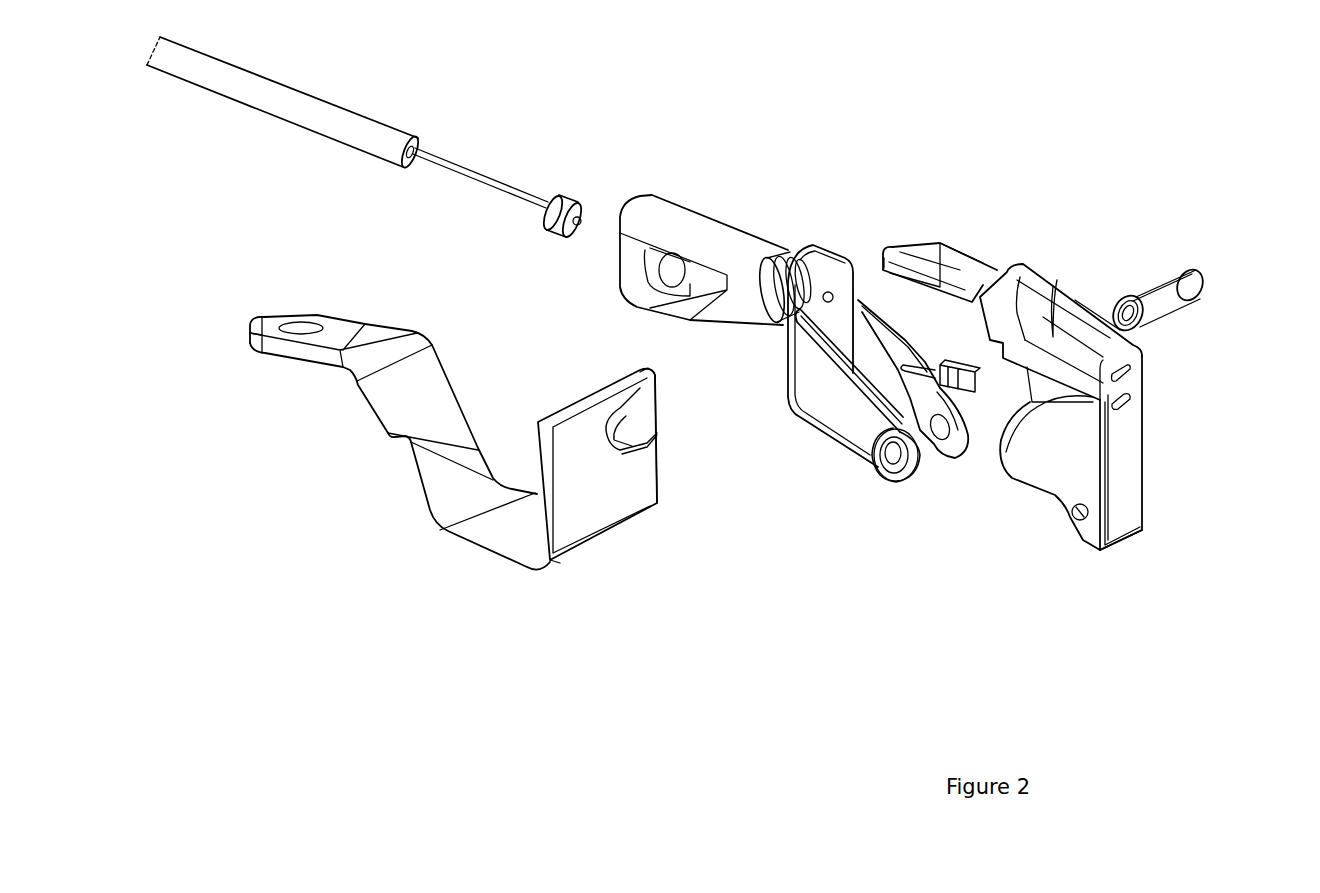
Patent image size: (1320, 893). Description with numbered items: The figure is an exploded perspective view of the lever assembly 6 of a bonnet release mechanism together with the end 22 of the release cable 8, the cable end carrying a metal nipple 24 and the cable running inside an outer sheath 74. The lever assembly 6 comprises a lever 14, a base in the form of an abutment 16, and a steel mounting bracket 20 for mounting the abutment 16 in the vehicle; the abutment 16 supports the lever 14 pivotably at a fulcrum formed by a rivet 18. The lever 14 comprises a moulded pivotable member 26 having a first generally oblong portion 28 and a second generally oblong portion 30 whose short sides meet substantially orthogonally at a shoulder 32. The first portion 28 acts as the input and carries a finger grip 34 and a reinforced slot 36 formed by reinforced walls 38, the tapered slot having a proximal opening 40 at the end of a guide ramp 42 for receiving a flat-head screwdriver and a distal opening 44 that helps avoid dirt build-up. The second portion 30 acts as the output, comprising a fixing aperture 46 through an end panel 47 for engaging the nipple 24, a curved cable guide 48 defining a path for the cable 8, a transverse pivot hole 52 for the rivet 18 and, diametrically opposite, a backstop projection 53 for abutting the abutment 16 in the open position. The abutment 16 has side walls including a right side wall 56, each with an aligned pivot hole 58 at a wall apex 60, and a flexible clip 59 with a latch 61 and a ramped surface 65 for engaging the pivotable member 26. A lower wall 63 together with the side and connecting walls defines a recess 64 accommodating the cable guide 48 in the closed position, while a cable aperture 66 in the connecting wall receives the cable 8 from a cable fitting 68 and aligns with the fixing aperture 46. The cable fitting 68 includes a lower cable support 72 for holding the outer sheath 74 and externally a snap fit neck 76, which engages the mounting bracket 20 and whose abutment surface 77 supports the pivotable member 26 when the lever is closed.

The lever assembly 6 is at (753, 589).
The cable 8 is at (435, 172).
The lever 14 is at (987, 181).
The abutment 16 is at (776, 404).
The rivet 18 is at (1175, 263).
The mounting bracket 20 is at (444, 569).
The end of the cable 22 is at (416, 129).
The nipple 24 is at (560, 196).
The pivotable member 26 is at (1167, 488).
The first portion 28 is at (1061, 270).
The second portion 30 is at (1136, 457).
The shoulder 32 is at (1145, 349).
The finger grip 34 is at (878, 268).
The reinforced slot 36 is at (909, 211).
The reinforced walls 38 is at (1062, 305).
The proximal opening 40 is at (909, 211).
The guide ramp 42 is at (900, 240).
The distal opening 44 is at (1140, 367).
The fixing aperture 46 is at (1130, 394).
The end panel 47 is at (1117, 428).
The cable guide 48 is at (1046, 428).
The transverse pivot hole 52 is at (1079, 518).
The backstop projection 53 is at (1112, 557).
The right side wall 56 is at (792, 362).
The pivot hole 58 is at (943, 433).
The flexible clip 59 is at (919, 420).
The wall apex 60 is at (894, 496).
The latch 61 is at (938, 362).
The lower wall 63 is at (914, 428).
The recess 64 is at (866, 378).
The ramped surface 65 is at (972, 364).
The cable aperture 66 is at (824, 293).
The cable fitting 68 is at (663, 227).
The lower cable support 72 is at (651, 289).
The outer sheath 74 is at (213, 78).
The snap fit neck 76 is at (807, 205).
The abutment surface 77 is at (800, 233).